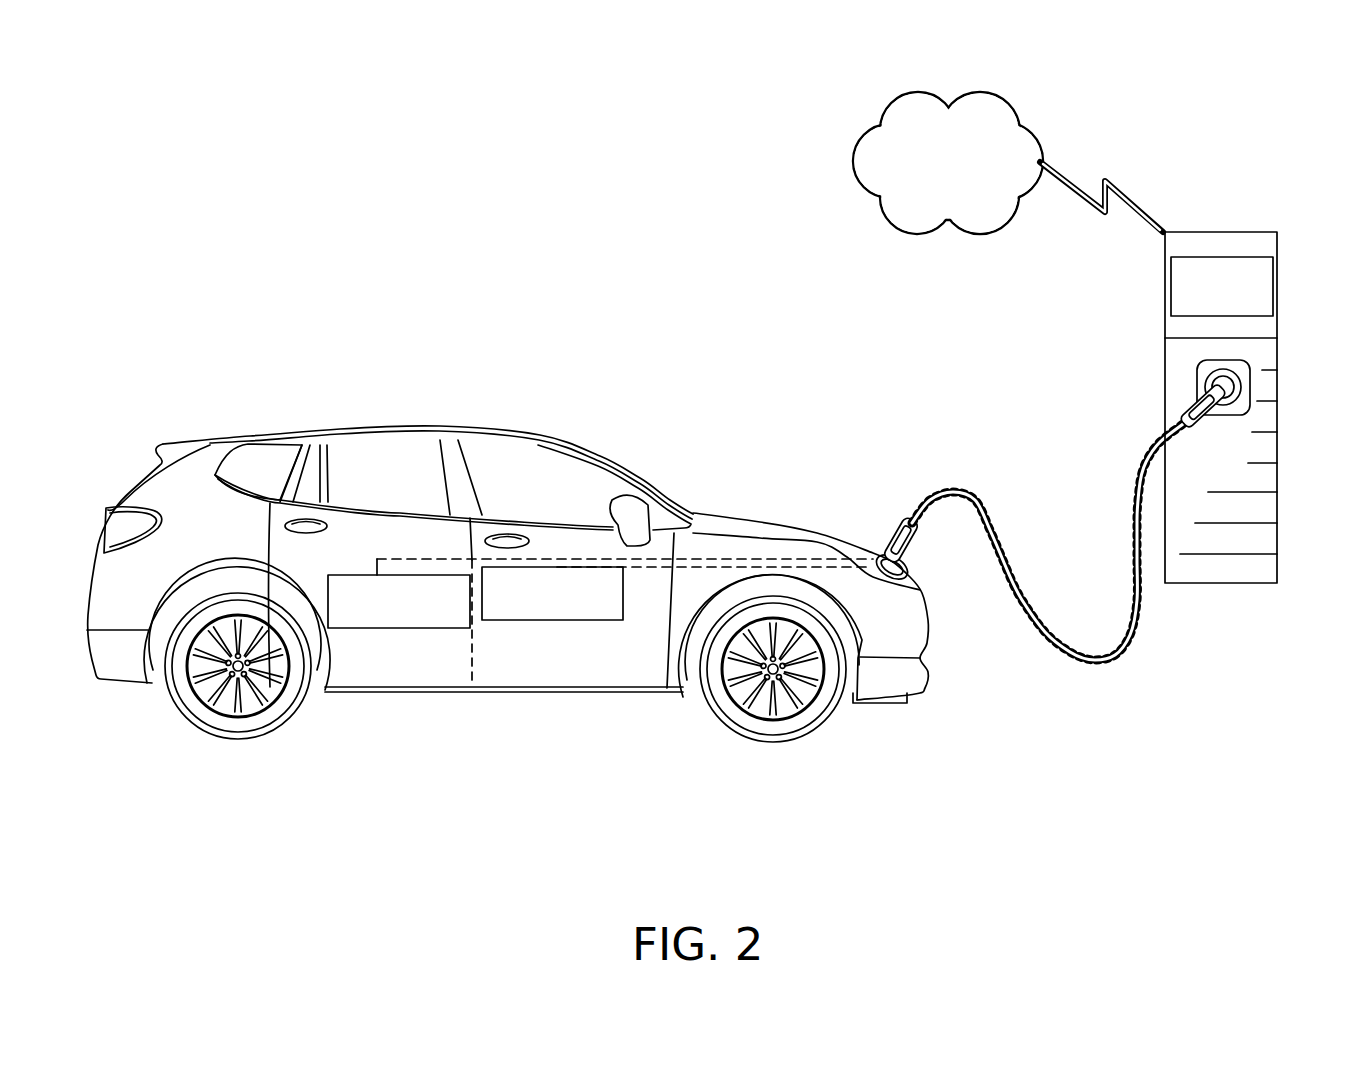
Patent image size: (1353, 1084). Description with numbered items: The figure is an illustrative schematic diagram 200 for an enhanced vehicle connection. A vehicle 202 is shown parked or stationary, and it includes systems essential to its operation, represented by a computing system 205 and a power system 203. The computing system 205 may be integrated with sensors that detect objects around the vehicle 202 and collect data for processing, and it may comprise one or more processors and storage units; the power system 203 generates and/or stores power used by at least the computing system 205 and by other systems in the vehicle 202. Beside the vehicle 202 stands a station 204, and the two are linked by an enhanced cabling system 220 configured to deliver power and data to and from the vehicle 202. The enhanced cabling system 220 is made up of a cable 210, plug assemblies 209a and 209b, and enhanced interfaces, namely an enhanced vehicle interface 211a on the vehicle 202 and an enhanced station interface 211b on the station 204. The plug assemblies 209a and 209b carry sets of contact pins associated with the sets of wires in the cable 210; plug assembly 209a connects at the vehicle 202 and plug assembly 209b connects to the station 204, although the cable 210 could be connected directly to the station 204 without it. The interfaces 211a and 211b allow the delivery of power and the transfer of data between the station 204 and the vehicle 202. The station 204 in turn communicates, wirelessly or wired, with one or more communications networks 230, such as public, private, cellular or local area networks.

The schematic diagram 200 is at (1233, 62).
The vehicle 202 is at (413, 427).
The power system 203 is at (583, 620).
The station 204 is at (1232, 232).
The computing system 205 is at (428, 632).
The plug assembly 209a is at (903, 527).
The plug assembly 209b is at (1205, 425).
The cable 210 is at (1100, 666).
The enhanced vehicle interface 211a is at (908, 570).
The enhanced station interface 211b is at (1238, 372).
The enhanced cabling system 220 is at (1083, 472).
The communications network(s) 230 is at (928, 195).